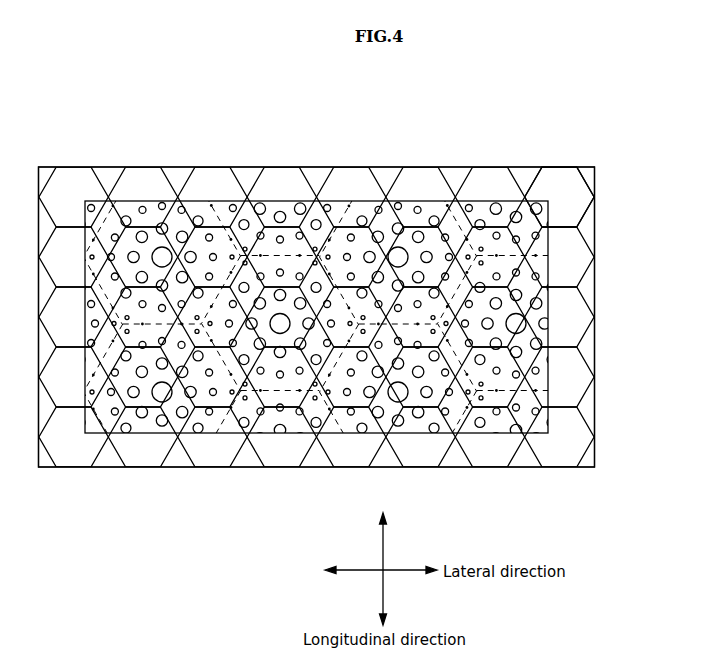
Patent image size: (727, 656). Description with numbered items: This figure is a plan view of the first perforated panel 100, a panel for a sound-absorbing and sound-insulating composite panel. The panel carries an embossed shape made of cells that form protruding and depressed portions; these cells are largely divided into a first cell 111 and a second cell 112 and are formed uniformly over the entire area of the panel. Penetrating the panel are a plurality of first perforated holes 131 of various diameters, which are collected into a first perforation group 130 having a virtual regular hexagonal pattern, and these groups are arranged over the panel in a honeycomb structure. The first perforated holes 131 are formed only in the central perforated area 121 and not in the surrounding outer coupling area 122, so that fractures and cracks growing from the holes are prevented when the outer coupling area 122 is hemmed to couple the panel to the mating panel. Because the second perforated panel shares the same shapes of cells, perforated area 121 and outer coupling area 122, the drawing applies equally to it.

The first perforated panel 100 is at (521, 148).
The first cell 111 is at (153, 170).
The second cell 112 is at (527, 223).
The perforated area 121 is at (550, 306).
The outer coupling area 122 is at (595, 357).
The first perforation group 130 is at (271, 256).
The first perforated hole 131 is at (433, 220).